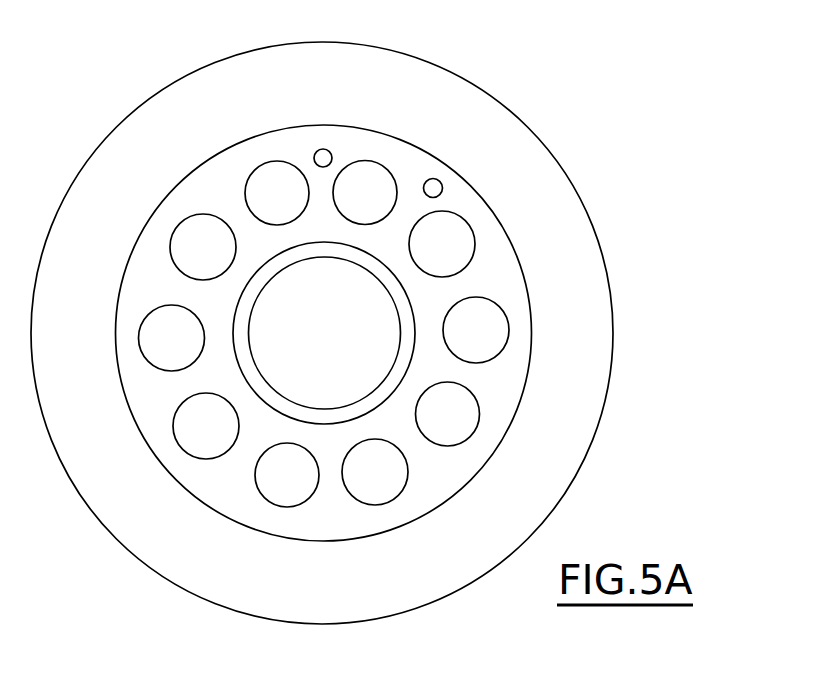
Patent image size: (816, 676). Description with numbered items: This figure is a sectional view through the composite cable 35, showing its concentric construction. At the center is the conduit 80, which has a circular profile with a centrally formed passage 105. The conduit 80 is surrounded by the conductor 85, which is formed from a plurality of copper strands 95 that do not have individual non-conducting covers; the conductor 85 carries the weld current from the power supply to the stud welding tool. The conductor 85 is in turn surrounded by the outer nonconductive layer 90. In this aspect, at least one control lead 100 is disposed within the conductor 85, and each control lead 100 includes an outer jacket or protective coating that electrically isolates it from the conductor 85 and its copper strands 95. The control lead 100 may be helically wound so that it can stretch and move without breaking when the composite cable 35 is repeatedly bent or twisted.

The composite cable 35 is at (527, 127).
The outer nonconductive layer 90 is at (457, 95).
The conduit 80 is at (272, 267).
The passage 105 is at (352, 323).
The control lead 100 is at (325, 148).
The conductor 85 is at (453, 415).
The copper strands 95 is at (265, 478).